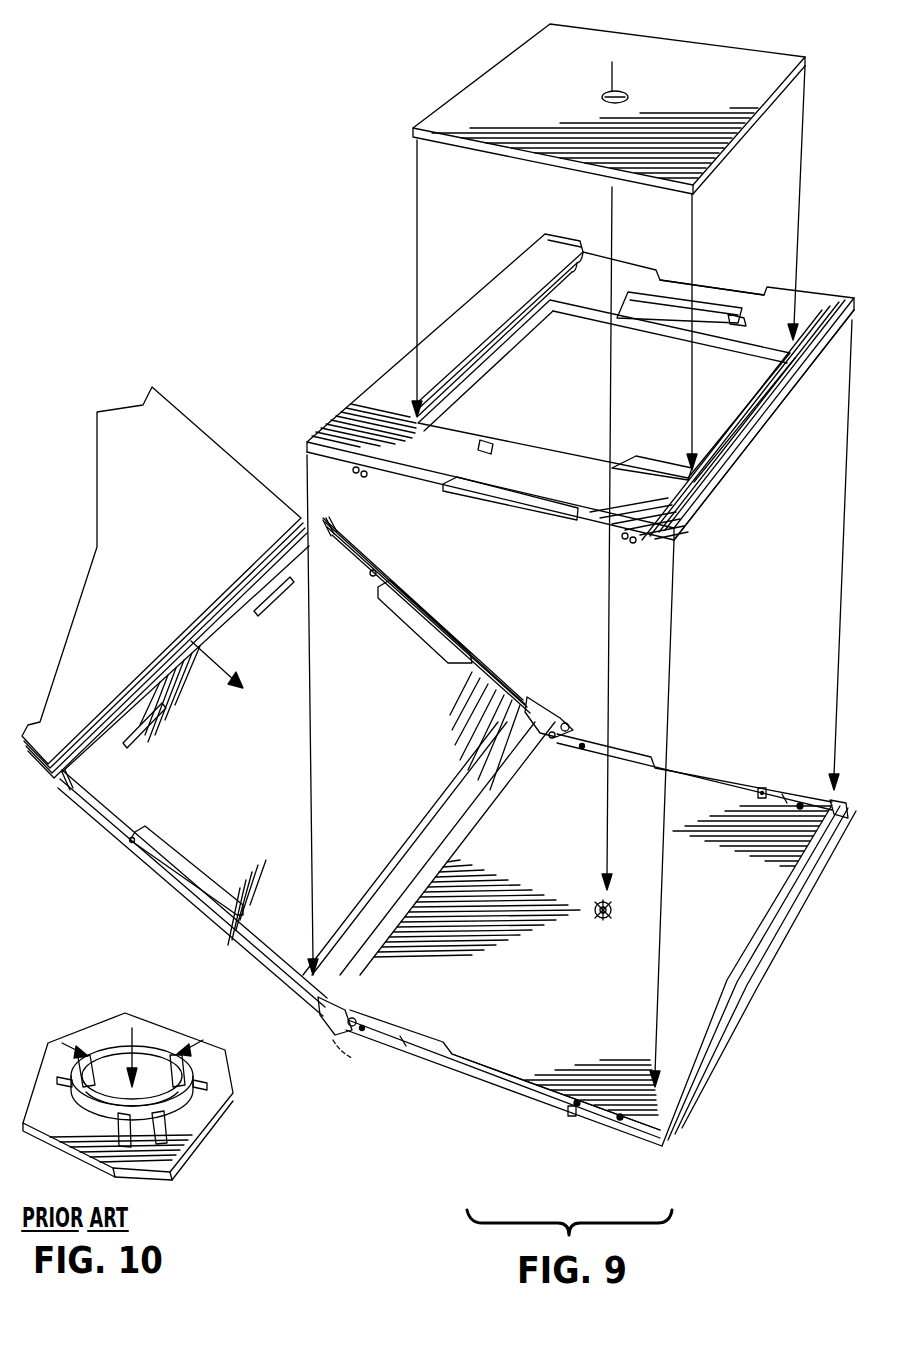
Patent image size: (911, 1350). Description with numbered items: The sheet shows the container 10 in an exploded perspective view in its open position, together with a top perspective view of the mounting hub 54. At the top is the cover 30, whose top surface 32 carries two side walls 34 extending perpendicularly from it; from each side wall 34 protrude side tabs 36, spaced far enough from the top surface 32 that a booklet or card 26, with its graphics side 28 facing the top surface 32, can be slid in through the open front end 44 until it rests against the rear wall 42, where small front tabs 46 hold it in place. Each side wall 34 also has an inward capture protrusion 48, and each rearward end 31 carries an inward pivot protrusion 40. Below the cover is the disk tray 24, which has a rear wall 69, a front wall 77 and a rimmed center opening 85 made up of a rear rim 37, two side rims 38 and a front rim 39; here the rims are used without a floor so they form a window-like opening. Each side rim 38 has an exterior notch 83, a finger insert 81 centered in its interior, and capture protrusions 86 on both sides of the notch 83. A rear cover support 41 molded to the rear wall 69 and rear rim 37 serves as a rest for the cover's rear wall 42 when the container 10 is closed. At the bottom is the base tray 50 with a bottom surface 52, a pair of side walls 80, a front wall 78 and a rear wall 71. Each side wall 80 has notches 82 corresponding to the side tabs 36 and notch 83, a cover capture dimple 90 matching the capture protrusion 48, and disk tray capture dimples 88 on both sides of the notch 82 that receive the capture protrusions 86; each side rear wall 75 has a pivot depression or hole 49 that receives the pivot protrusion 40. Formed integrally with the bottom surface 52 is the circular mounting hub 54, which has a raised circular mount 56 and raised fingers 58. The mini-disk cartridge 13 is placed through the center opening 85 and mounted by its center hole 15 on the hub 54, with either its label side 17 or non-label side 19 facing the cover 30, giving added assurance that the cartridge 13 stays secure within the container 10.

In FIG. 9, the container 10 is at (352, 322).
In FIG. 9, the mini-disk cartridge 13 is at (430, 106).
In FIG. 9, the center hole 15 is at (626, 92).
In FIG. 9, the label side 17 is at (752, 122).
In FIG. 9, the non-label side 19 is at (768, 56).
In FIG. 9, the disk tray 24 is at (336, 410).
In FIG. 9, the booklet or card 26 is at (178, 402).
In FIG. 9, the graphics side 28 is at (32, 762).
In FIG. 9, the cover 30 is at (380, 545).
In FIG. 9, the rearward end 31 is at (540, 690).
In FIG. 9, the top surface 32 is at (241, 745).
In FIG. 9, the side walls 34 is at (495, 657).
In FIG. 9, the side tabs 36 is at (400, 612).
In FIG. 9, the rear rim 37 is at (482, 375).
In FIG. 9, the side rims 38 is at (578, 315).
In FIG. 9, the front rim 39 is at (755, 437).
In FIG. 9, the pivot protrusion 40 is at (550, 740).
In FIG. 9, the rear cover support 41 is at (527, 308).
In FIG. 9, the rear wall 42 is at (410, 857).
In FIG. 9, the open front end 44 is at (332, 516).
In FIG. 9, the front tabs 46 is at (265, 614).
In FIG. 9, the capture protrusion 48 is at (380, 573).
In FIG. 9, the pivot depression or hole 49 is at (349, 1056).
In FIG. 9, the base tray 50 is at (440, 1072).
In FIG. 9, the bottom surface 52 is at (465, 1010).
In FIG. 10, the bottom surface 52 is at (195, 1128).
In FIG. 9, the mounting hub 54 is at (615, 888).
In FIG. 10, the mounting hub 54 is at (150, 1020).
In FIG. 10, the raised circular mount 56 is at (116, 1048).
In FIG. 10, the raised fingers 58 is at (85, 1058).
In FIG. 9, the rear wall 69 is at (548, 262).
In FIG. 9, the rear wall 71 is at (465, 835).
In FIG. 9, the base tray side rear wall 75 is at (569, 724).
In FIG. 9, the front wall 77 is at (700, 507).
In FIG. 9, the front wall 78 is at (748, 952).
In FIG. 9, the side walls 80 is at (784, 792).
In FIG. 9, the finger insert 81 is at (745, 321).
In FIG. 9, the notches 82 is at (706, 780).
In FIG. 9, the notch 83 is at (728, 286).
In FIG. 9, the rimmed center opening 85 is at (750, 433).
In FIG. 9, the capture protrusions 86 is at (362, 478).
In FIG. 9, the disk tray capture dimple 88 is at (582, 750).
In FIG. 9, the cover capture dimple 90 is at (762, 788).